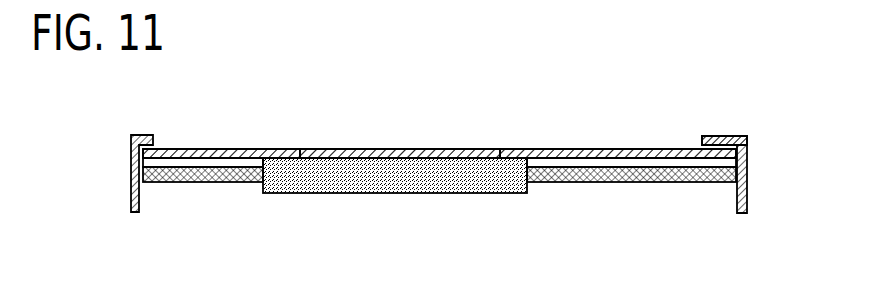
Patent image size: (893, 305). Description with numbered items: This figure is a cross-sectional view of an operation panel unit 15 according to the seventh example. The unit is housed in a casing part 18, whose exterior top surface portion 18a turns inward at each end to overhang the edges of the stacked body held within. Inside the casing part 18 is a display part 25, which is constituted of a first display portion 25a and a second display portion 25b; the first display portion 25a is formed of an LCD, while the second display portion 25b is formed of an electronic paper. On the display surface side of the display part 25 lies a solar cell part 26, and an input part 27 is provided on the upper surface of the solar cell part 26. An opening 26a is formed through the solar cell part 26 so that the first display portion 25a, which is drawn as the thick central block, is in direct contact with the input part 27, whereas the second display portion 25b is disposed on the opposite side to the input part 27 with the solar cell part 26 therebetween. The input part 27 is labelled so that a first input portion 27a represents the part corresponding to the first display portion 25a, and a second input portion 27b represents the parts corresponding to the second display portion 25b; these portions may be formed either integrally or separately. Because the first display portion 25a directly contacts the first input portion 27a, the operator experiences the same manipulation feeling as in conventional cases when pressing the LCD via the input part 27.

The operation panel unit 15 is at (531, 105).
The casing part 18 is at (750, 186).
The exterior top surface portion 18a is at (737, 135).
The display part 25 is at (583, 258).
The first display portion 25a is at (508, 193).
The second display portion 25b is at (588, 183).
The solar cell part 26 is at (653, 162).
The opening 26a is at (231, 181).
The input part 27 is at (493, 67).
The first input portion 27a is at (415, 151).
The second input portion 27b is at (228, 152).